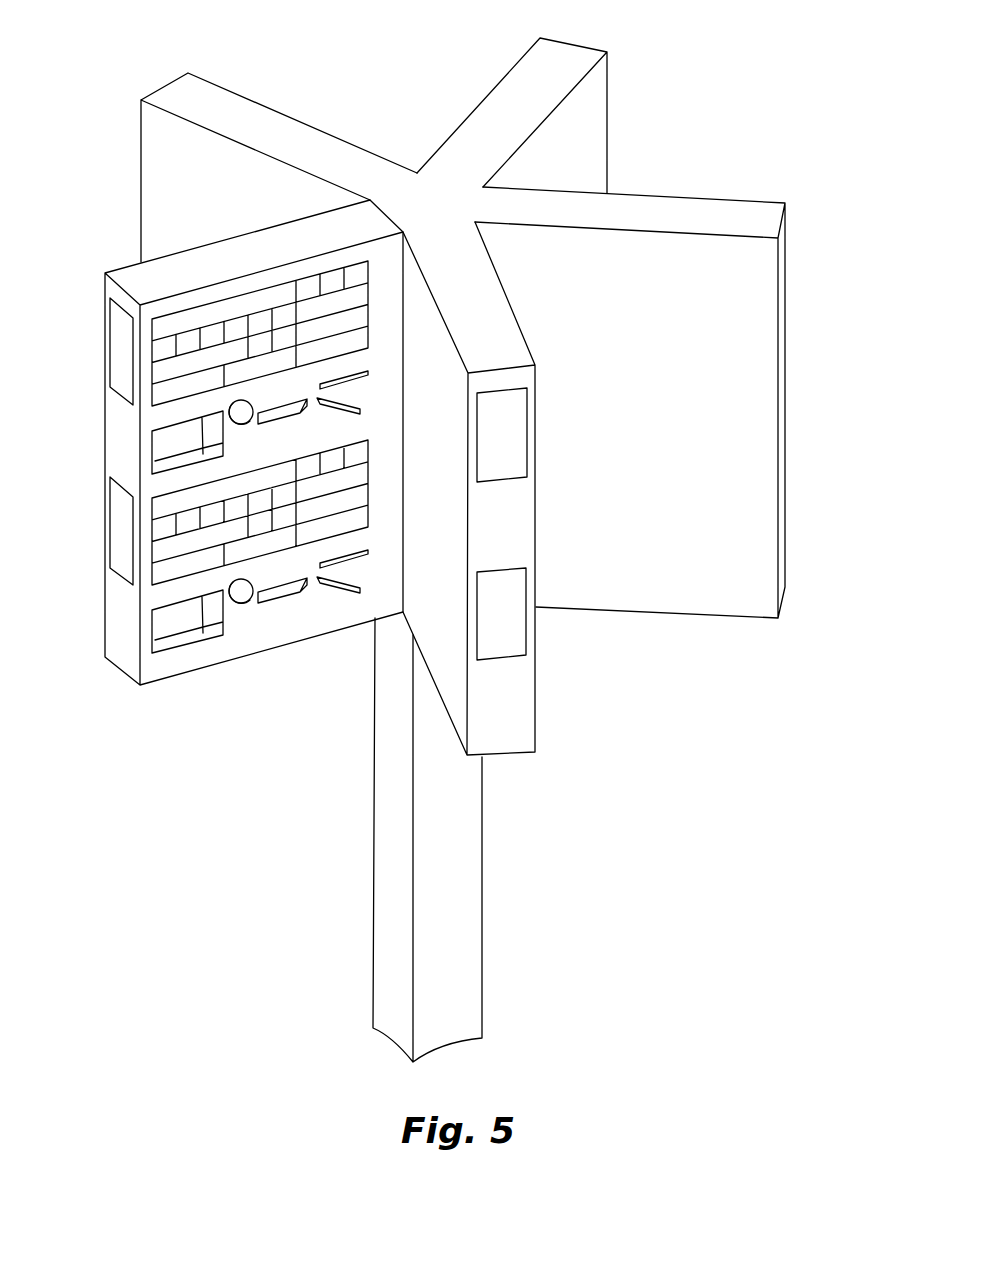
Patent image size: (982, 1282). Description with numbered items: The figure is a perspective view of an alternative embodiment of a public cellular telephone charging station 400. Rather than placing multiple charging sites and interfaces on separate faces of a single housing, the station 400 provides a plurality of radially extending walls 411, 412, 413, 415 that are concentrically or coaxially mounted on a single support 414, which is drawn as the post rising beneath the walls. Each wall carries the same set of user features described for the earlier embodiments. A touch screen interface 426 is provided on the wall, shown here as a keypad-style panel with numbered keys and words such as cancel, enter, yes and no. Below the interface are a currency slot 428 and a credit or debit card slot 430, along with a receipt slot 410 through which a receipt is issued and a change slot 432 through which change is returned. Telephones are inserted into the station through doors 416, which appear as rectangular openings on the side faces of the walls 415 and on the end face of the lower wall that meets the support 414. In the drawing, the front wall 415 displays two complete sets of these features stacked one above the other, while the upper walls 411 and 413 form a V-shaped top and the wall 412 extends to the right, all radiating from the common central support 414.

The station 400 is at (691, 118).
The radially extending wall 411 is at (502, 107).
The radially extending wall 412 is at (778, 467).
The radially extending wall 413 is at (228, 105).
The support 414 is at (477, 888).
The radially extending wall 415 is at (128, 275).
The door 416 is at (122, 344).
The touch screen interface 426 is at (285, 282).
The currency slot 428 is at (347, 590).
The credit or debit card slot 430 is at (368, 550).
The receipt slot 410 is at (282, 597).
The change slot 432 is at (178, 633).